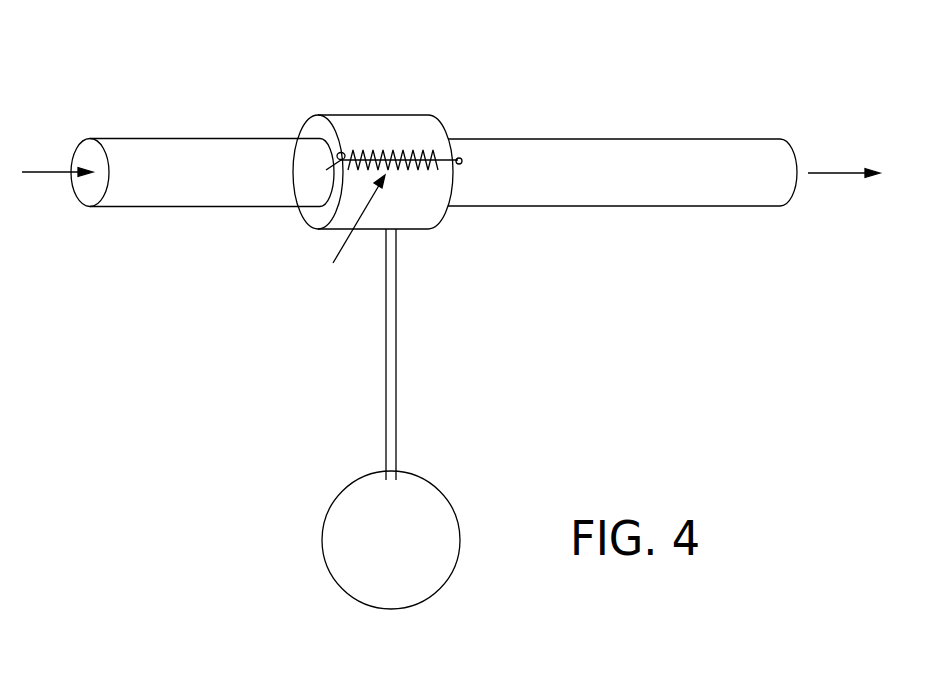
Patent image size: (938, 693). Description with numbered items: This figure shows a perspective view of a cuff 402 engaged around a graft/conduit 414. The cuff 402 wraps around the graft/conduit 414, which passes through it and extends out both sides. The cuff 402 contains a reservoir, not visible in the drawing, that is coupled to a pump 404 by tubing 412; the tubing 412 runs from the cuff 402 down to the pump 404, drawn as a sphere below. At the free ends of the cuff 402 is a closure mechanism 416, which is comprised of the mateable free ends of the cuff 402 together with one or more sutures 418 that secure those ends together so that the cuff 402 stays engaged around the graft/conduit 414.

The cuff 402 is at (418, 196).
The pump 404 is at (342, 498).
The tubing 412 is at (397, 385).
The graft/conduit 414 is at (611, 141).
The closure mechanism 416 is at (341, 237).
The sutures 418 is at (402, 152).